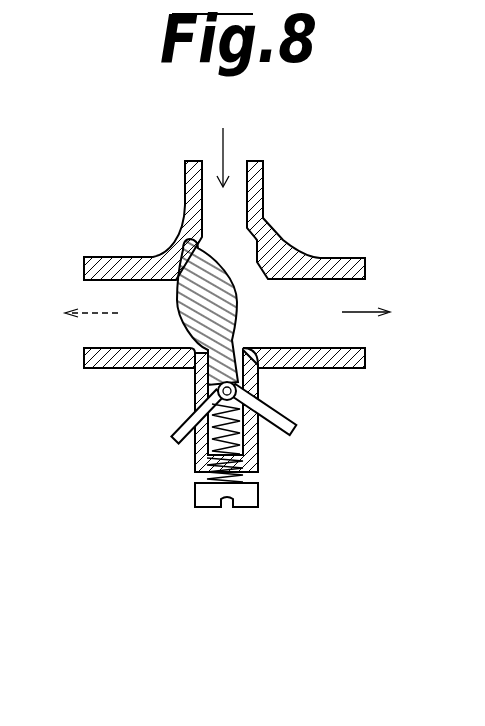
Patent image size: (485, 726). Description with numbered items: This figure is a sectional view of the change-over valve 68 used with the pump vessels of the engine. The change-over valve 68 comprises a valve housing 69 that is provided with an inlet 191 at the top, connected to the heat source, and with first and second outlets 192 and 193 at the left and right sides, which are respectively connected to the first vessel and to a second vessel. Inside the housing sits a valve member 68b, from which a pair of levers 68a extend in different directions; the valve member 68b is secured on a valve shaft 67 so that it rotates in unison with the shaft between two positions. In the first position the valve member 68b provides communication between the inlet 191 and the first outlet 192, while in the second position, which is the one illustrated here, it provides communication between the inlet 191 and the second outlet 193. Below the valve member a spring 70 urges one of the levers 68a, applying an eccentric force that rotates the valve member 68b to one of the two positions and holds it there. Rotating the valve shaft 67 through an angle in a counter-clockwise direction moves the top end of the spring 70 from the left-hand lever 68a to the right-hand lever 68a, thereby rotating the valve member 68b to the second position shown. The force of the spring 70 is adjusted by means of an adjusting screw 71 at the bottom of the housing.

The inlet 191 is at (237, 162).
The first outlet 192 is at (96, 333).
The second outlet 193 is at (368, 293).
The change-over valve 68 is at (283, 229).
The valve housing 69 is at (350, 258).
The levers 68a is at (278, 420).
The valve member 68b is at (240, 297).
The valve shaft 67 is at (207, 386).
The spring 70 is at (252, 427).
The adjusting screw 71 is at (196, 494).